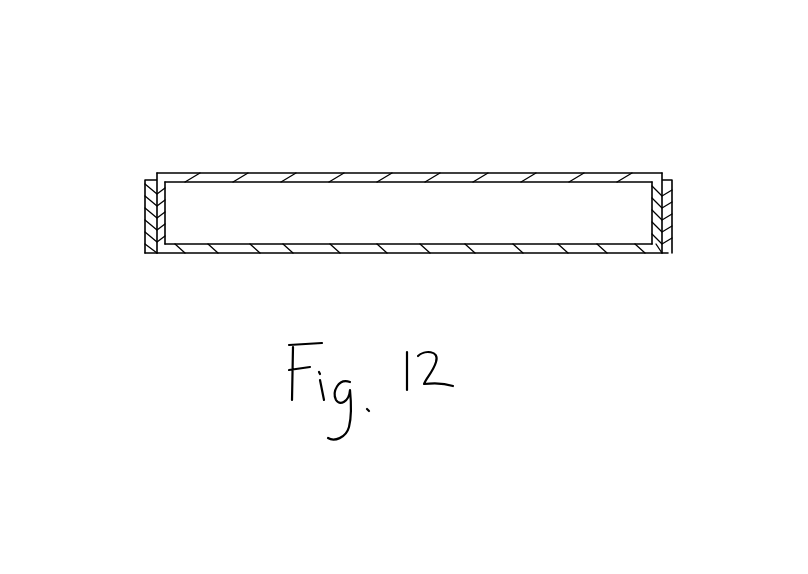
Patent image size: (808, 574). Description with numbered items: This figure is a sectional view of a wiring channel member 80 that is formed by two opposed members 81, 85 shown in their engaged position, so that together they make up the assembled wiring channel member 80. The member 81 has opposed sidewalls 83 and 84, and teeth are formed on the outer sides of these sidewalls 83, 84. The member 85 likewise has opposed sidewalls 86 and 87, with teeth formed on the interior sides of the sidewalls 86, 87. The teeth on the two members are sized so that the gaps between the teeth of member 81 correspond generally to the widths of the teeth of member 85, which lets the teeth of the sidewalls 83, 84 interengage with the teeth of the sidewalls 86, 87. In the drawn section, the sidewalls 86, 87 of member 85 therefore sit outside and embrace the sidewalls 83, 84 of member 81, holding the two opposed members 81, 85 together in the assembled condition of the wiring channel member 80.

The wiring channel member 80 is at (414, 169).
The opposed member 81 is at (385, 177).
The sidewall 83 is at (167, 212).
The sidewall 84 is at (627, 213).
The opposed member 85 is at (495, 257).
The sidewall 86 is at (145, 210).
The sidewall 87 is at (674, 210).